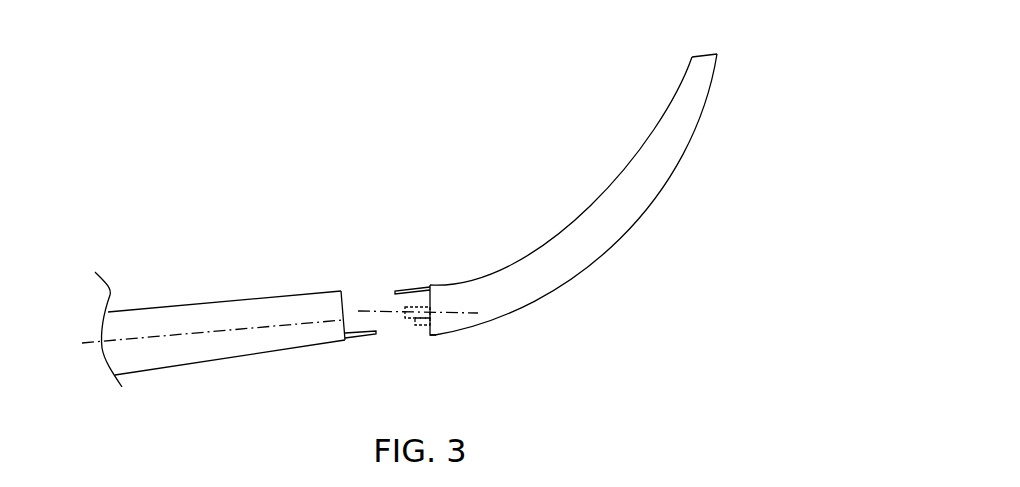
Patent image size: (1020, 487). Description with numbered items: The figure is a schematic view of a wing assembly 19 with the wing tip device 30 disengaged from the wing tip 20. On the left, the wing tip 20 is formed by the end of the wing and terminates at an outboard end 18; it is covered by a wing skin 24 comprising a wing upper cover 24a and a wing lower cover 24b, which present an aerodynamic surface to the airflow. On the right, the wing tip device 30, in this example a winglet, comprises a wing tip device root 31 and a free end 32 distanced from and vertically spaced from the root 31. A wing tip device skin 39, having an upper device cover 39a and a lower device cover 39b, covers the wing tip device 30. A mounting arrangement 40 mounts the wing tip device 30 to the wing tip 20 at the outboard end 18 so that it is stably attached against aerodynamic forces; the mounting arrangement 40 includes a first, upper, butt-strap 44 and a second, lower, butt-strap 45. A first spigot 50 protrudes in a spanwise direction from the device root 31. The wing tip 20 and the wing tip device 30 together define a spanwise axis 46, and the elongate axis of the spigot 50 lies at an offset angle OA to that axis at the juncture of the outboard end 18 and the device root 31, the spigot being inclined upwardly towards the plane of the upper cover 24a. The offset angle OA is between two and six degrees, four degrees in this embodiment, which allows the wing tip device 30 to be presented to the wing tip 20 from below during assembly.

The wing assembly 19 is at (718, 299).
The wing tip 20 is at (162, 220).
The wing skin 24 is at (232, 298).
The wing upper cover 24a is at (262, 297).
The wing lower cover 24b is at (228, 362).
The outboard end 18 is at (342, 286).
The spanwise axis 46 is at (181, 333).
The second, lower, butt-strap 45 is at (361, 340).
The offset angle OA is at (376, 318).
The mounting arrangement 40 is at (383, 183).
The first, upper, butt-strap 44 is at (415, 288).
The wing tip device root 31 is at (450, 325).
The first spigot 50 is at (420, 322).
The wing tip device 30 is at (622, 87).
The wing tip device skin 39 is at (513, 262).
The upper device cover 39a is at (567, 230).
The lower device cover 39b is at (563, 287).
The free end 32 is at (705, 65).